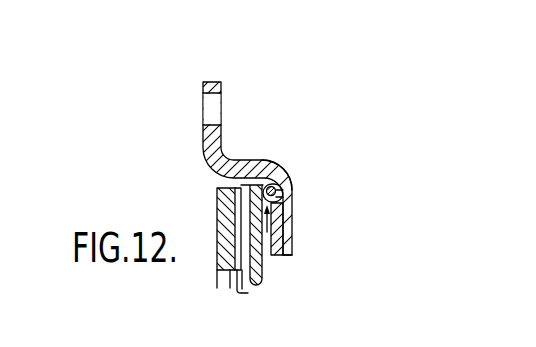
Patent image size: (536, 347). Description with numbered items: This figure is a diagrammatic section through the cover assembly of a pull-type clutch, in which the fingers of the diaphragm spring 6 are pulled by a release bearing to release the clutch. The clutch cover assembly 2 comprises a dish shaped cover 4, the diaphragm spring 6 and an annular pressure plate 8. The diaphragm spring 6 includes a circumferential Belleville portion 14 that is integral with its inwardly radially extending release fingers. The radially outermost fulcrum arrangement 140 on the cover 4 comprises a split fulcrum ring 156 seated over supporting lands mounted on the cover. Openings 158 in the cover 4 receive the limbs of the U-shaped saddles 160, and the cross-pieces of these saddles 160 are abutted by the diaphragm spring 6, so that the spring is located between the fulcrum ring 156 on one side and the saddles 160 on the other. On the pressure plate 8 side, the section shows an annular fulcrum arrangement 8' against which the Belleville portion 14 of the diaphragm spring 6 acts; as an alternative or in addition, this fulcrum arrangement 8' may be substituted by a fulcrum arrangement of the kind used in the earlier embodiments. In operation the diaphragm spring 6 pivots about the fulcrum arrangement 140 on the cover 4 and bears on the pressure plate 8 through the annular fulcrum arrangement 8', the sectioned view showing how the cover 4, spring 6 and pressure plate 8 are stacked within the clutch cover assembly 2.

The clutch cover assembly 2 is at (247, 147).
The dish shaped cover 4 is at (278, 168).
The annular pressure plate 8 is at (204, 248).
The annular fulcrum arrangement 8' is at (230, 297).
The diaphragm spring 6 is at (265, 262).
The circumferential Belleville portion 14 is at (293, 248).
The radially outermost fulcrum arrangement 140 is at (291, 233).
The split fulcrum ring 156 is at (290, 197).
The openings 158 is at (290, 199).
The U-shaped saddles 160 is at (290, 195).